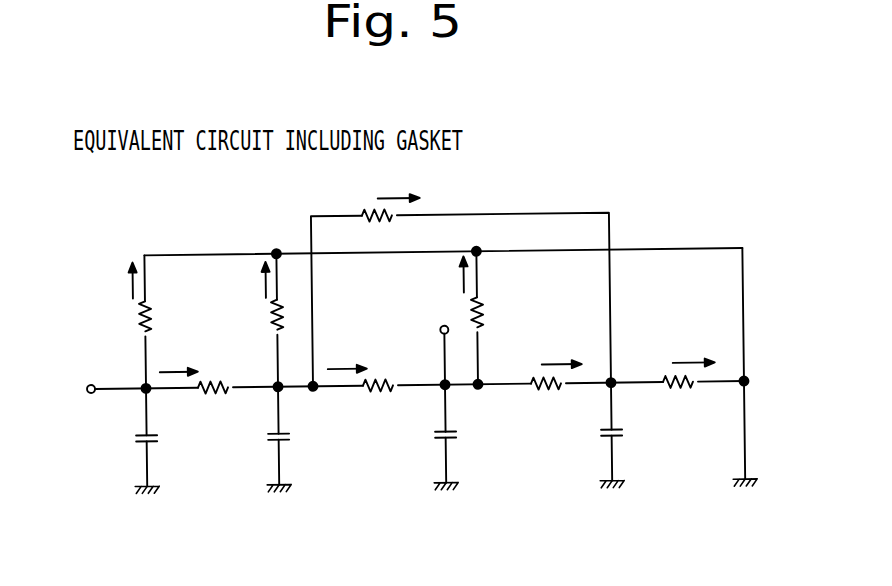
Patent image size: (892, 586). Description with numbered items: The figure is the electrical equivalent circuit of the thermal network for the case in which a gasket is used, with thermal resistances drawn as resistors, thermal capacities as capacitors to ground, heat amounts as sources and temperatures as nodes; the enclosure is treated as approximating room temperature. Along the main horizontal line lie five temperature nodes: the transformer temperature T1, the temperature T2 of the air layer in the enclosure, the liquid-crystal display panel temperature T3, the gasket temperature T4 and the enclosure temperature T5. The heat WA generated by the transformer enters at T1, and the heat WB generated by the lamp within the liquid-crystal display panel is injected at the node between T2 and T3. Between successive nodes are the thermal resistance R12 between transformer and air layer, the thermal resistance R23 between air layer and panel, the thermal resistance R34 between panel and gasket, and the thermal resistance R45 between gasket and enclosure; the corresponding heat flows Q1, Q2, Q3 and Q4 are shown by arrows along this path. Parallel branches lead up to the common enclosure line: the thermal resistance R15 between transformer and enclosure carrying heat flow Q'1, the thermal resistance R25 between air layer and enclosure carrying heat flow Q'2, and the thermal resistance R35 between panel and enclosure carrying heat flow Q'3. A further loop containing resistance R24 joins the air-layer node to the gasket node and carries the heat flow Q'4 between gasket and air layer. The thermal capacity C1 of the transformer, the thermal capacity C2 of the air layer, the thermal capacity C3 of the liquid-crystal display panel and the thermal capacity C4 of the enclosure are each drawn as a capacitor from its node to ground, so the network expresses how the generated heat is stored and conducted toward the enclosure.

The amount of heat generated by the transformer WA is at (103, 370).
The amount of heat generated by the lamp WB is at (430, 360).
The temperature of the transformer T1 is at (136, 375).
The temperature of the air layer in the enclosure T2 is at (267, 375).
The temperature of the liquid-crystal display panel T3 is at (489, 371).
The temperature of the gasket T4 is at (621, 369).
The temperature of the enclosure T5 is at (755, 369).
The thermal resistance between the transformer and the air layer R12 is at (210, 403).
The thermal resistance between the air layer and the liquid-crystal display panel R23 is at (377, 401).
The thermal resistance between the liquid-crystal display panel and the gasket R34 is at (543, 398).
The thermal resistance between the gasket and the enclosure R45 is at (676, 397).
The thermal resistance between the transformer and the enclosure R15 is at (165, 316).
The thermal resistance between the air layer and the enclosure R25 is at (257, 322).
The thermal resistance between the liquid-crystal display panel and the enclosure R35 is at (498, 310).
The thermal resistance between T2 and T4 (gasket) R24 is at (373, 232).
The thermal capacity of the transformer C1 is at (139, 450).
The thermal capacity of the air layer in the enclosure C2 is at (271, 450).
The thermal capacity of the liquid-crystal display panel C3 is at (438, 446).
The thermal capacity of the enclosure C4 is at (604, 445).
The heat flow between the transformer and the air layer Q1 is at (192, 361).
The heat flow between the air layer and the liquid-crystal display panel Q2 is at (358, 358).
The heat flow between the liquid-crystal display panel and the gasket Q3 is at (559, 354).
The heat flow between the gasket and the enclosure Q4 is at (691, 352).
The heat flow between the transformer and the enclosure Q'1 is at (117, 280).
The heat flow between the air layer and the enclosure Q'2 is at (249, 280).
The heat flow between the liquid-crystal display panel and the enclosure Q'3 is at (446, 274).
The heat flow between the gasket and the air layer Q'4 is at (392, 187).